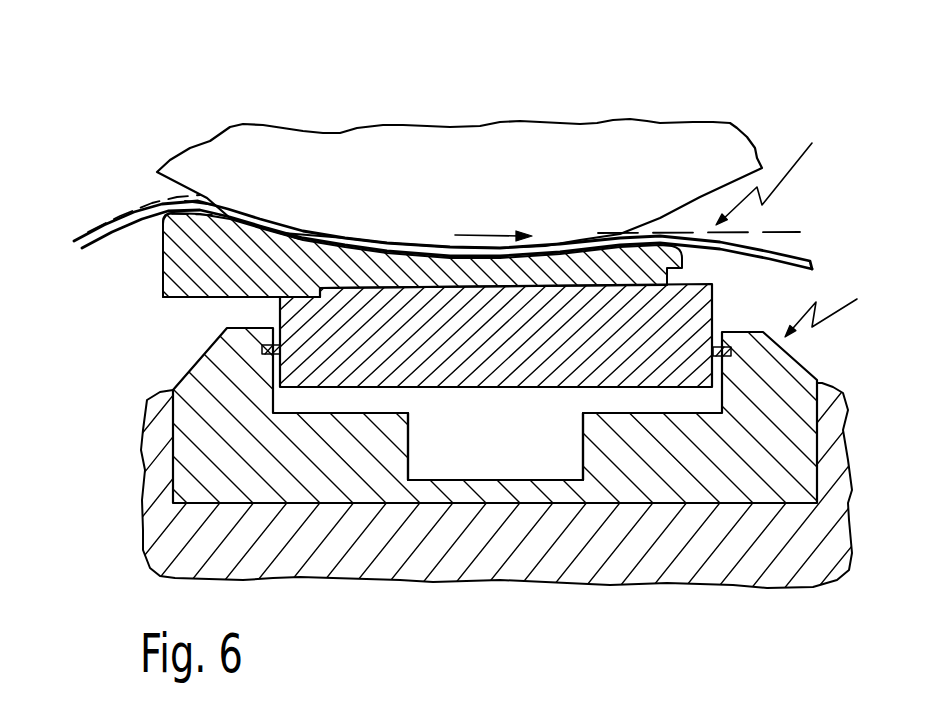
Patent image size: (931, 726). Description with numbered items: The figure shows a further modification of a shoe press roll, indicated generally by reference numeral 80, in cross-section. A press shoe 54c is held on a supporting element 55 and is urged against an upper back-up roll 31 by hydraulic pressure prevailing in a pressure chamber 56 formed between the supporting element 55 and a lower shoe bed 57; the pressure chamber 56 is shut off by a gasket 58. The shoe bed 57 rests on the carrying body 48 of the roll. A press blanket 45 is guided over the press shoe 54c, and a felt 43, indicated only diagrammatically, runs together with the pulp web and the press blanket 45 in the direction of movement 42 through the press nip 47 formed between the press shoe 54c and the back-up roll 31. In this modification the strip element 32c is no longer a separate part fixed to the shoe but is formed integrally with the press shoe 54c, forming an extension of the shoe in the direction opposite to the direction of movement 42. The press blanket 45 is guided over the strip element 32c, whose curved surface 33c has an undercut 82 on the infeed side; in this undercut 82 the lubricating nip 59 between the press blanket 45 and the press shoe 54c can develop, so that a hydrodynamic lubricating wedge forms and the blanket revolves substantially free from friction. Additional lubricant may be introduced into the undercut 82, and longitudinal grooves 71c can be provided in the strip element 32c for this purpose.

The upper back-up roll 31 is at (650, 172).
The strip element 32c is at (175, 270).
The curved surface 33c is at (165, 213).
The direction of movement 42 is at (470, 235).
The felt 43 is at (800, 233).
The press blanket 45 is at (813, 260).
The press nip 47 is at (774, 171).
The carrying body 48 is at (397, 547).
The press shoe 54c is at (380, 263).
The supporting element 55 is at (510, 343).
The pressure chamber 56 is at (478, 446).
The shoe bed 57 is at (560, 492).
The gasket 58 is at (730, 345).
The lubricating nip 59 is at (273, 231).
The longitudinal grooves 71c is at (197, 203).
The roll modification 80 is at (834, 306).
The undercut 82 is at (233, 223).